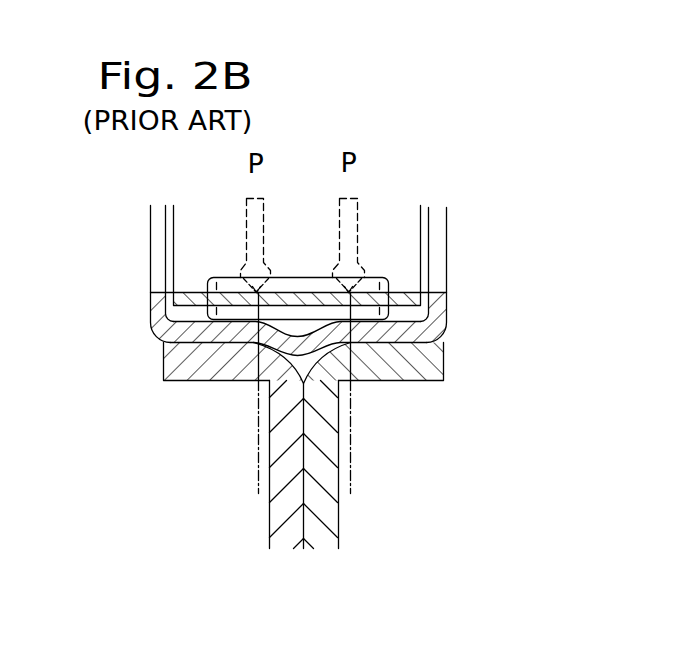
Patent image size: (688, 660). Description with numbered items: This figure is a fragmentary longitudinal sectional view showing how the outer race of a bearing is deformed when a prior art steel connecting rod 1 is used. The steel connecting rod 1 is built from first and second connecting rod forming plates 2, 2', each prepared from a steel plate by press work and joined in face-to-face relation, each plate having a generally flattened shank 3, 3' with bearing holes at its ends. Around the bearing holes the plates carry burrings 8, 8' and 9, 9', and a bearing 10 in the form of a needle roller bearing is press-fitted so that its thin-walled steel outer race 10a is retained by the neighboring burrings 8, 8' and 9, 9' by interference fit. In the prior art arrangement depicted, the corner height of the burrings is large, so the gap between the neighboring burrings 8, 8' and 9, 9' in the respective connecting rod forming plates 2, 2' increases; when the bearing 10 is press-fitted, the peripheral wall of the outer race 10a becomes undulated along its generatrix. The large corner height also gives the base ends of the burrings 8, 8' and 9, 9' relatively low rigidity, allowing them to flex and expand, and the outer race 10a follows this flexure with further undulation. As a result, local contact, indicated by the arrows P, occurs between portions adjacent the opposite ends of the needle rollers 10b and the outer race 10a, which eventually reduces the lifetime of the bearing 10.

The steel connecting rod 1 is at (220, 483).
The first connecting rod forming plate 2 is at (226, 421).
The second connecting rod forming plate 2' is at (397, 415).
The shank 3 is at (258, 500).
The shank 3' is at (365, 482).
The burring 8 is at (204, 408).
The burring 8' is at (401, 408).
The burring 9 is at (234, 363).
The burring 9' is at (374, 363).
The bearing 10 is at (137, 238).
The outer race 10a is at (430, 319).
The needle rollers 10b is at (368, 280).